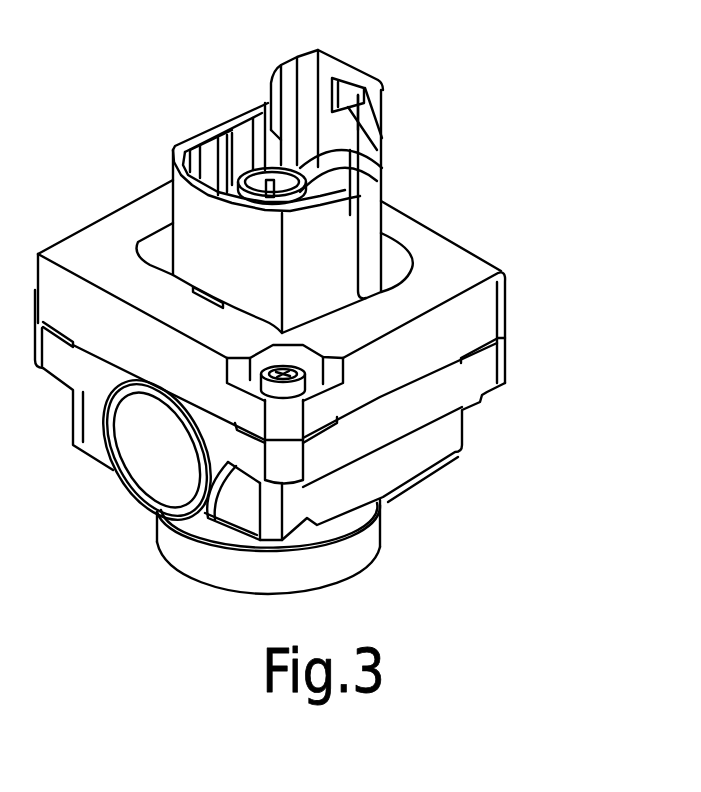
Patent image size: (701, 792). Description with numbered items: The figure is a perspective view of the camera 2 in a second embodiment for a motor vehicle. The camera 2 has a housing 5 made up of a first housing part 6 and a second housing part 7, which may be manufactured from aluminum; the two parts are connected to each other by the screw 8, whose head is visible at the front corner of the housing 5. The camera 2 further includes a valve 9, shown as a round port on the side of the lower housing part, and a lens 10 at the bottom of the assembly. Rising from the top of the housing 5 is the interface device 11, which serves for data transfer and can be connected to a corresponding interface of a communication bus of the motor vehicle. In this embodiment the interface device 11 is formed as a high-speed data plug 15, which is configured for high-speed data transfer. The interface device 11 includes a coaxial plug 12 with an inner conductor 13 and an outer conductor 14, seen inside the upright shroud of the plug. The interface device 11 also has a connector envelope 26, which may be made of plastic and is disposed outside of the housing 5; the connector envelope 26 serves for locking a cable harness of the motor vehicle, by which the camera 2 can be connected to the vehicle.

The camera 2 is at (538, 286).
The housing 5 is at (537, 349).
The first housing part 6 is at (460, 267).
The second housing part 7 is at (485, 373).
The screw 8 is at (303, 388).
The valve 9 is at (147, 449).
The lens 10 is at (370, 540).
The interface device 11 is at (398, 85).
The coaxial plug 12 is at (267, 137).
The inner conductor 13 is at (228, 128).
The outer conductor 14 is at (297, 170).
The high-speed data plug 15 is at (428, 79).
The connector envelope 26 is at (362, 200).